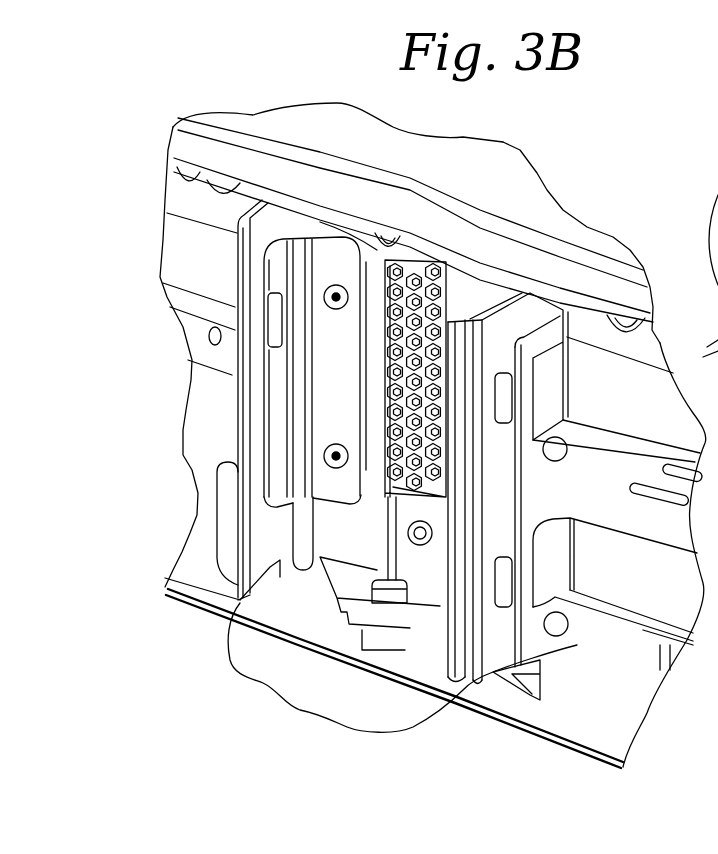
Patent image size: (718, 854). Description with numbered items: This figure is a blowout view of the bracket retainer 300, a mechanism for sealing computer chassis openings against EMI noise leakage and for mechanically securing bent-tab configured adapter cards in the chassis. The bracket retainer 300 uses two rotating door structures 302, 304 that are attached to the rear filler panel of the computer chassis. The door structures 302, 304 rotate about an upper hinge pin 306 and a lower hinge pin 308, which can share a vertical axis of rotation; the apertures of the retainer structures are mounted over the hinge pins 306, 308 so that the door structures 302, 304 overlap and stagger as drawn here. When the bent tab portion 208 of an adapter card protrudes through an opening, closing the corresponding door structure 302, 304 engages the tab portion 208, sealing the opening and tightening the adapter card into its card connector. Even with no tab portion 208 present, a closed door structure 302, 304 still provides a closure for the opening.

The tab portion 208 is at (232, 497).
The bracket retainer 300 is at (290, 712).
The door structure 302 is at (337, 265).
The door structure 304 is at (498, 330).
The upper hinge pin 306 is at (381, 238).
The lower hinge pin 308 is at (390, 597).